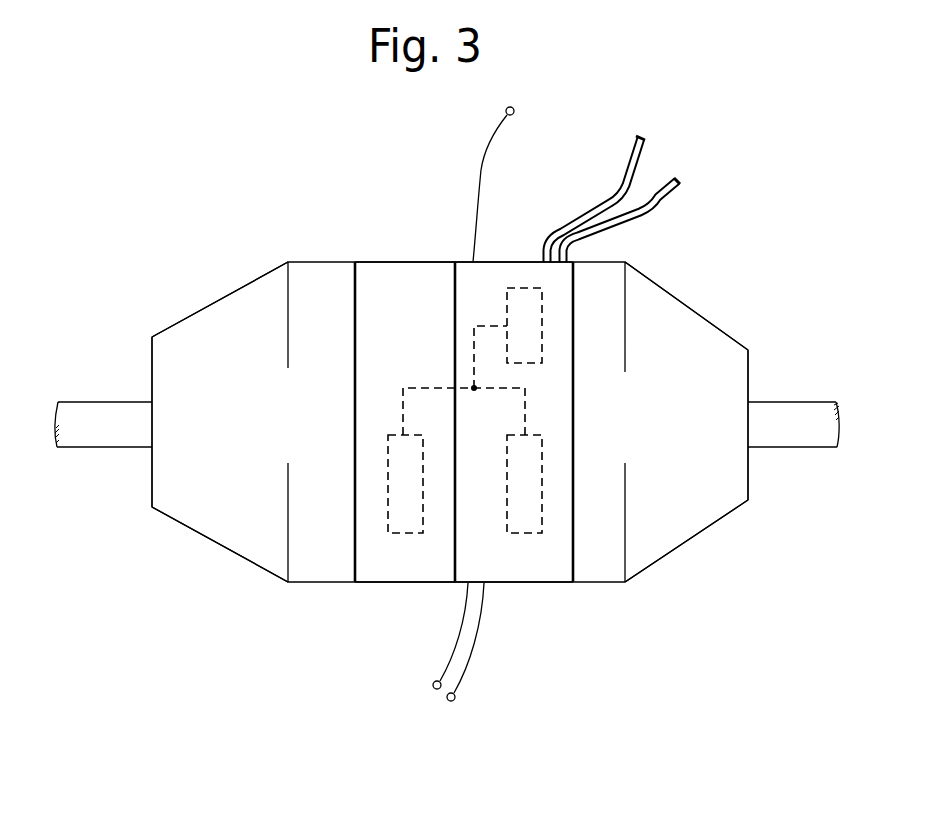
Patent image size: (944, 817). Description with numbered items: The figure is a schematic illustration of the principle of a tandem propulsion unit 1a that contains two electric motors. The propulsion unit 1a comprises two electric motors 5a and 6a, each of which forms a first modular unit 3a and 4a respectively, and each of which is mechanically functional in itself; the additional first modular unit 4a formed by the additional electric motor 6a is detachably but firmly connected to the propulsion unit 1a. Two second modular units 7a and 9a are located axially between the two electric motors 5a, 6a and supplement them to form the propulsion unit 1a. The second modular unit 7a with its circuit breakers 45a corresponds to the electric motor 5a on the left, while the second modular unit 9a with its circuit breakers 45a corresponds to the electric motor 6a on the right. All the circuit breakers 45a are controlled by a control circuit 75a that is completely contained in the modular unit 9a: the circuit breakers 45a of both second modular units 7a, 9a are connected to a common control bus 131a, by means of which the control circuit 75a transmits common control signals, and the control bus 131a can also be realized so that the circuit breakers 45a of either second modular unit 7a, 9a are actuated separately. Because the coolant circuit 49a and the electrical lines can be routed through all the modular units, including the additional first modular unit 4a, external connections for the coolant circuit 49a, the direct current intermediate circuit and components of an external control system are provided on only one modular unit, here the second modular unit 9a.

The tandem propulsion unit 1a is at (276, 610).
The first modular unit 3a is at (240, 284).
The additional first modular unit 4a is at (696, 306).
The electric motor 5a is at (219, 512).
The electric motor 6a is at (692, 517).
The second modular unit 7a is at (393, 261).
The second modular unit 9a is at (516, 254).
The circuit breakers 45a is at (415, 533).
The coolant circuit 49a is at (672, 212).
The control circuit 75a is at (540, 326).
The control bus 131a is at (428, 388).